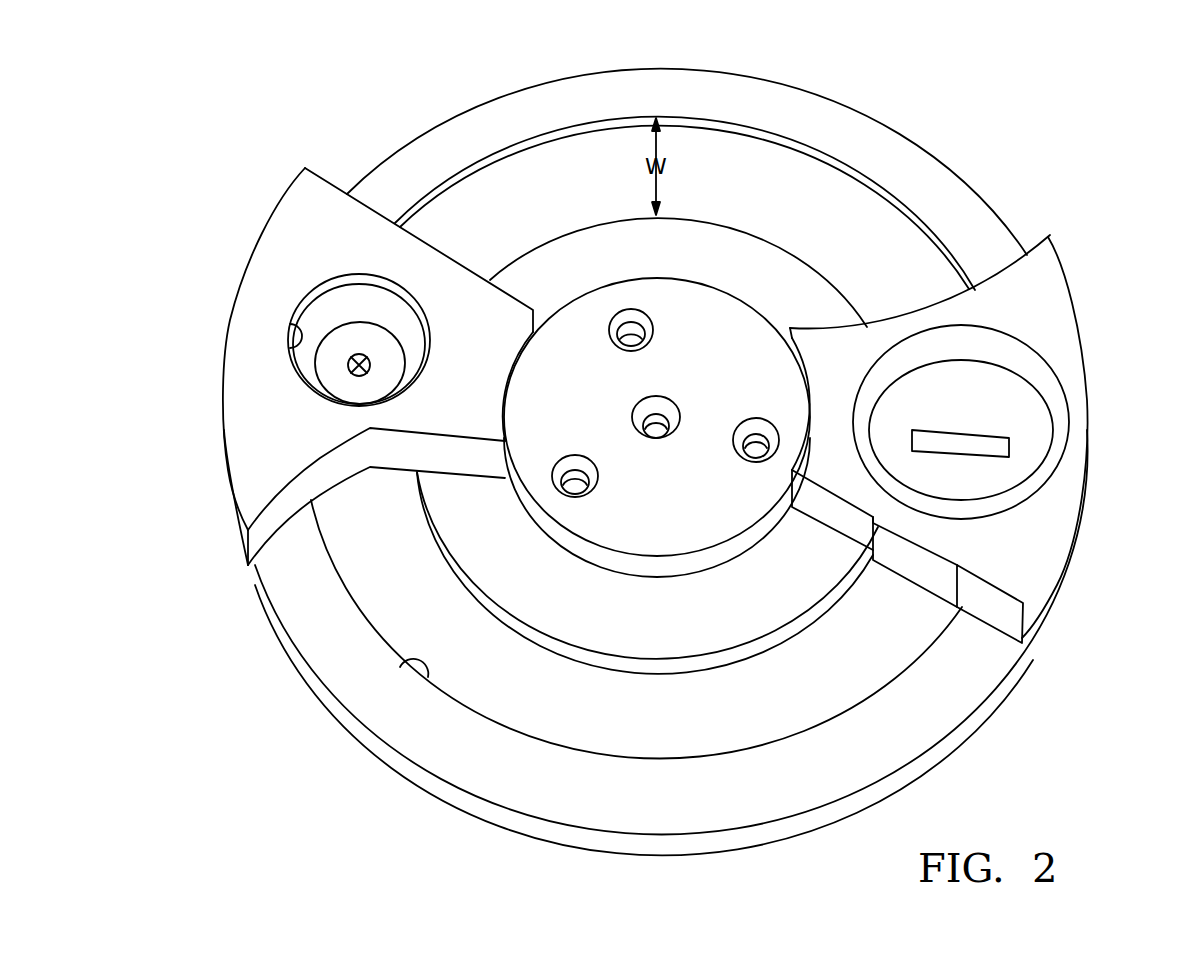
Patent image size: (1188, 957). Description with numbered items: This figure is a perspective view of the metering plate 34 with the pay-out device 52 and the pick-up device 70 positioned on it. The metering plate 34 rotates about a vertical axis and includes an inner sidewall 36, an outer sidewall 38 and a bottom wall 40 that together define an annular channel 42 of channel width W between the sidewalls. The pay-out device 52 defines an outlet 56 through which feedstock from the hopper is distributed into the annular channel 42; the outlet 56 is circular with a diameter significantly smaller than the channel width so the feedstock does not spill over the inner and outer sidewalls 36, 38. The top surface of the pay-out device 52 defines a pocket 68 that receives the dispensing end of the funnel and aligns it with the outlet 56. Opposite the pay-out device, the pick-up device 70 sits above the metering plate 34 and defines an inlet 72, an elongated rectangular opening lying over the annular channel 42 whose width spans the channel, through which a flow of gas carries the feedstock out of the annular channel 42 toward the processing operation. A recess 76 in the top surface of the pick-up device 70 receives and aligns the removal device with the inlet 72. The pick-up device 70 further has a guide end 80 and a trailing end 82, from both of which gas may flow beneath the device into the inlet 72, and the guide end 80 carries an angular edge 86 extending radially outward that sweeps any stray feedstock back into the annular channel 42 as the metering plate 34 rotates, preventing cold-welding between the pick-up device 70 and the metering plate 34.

The metering plate 34 is at (935, 160).
The inner sidewall 36 is at (595, 658).
The outer sidewall 38 is at (583, 127).
The bottom wall 40 is at (845, 678).
The annular channel 42 is at (427, 678).
The pay-out device 52 is at (284, 193).
The outlet 56 is at (357, 354).
The pocket 68 is at (300, 337).
The pick-up device 70 is at (1074, 297).
The inlet 72 is at (988, 450).
The recess 76 is at (1061, 431).
The guide end 80 is at (990, 286).
The trailing end 82 is at (998, 605).
The angular edge 86 is at (1000, 284).